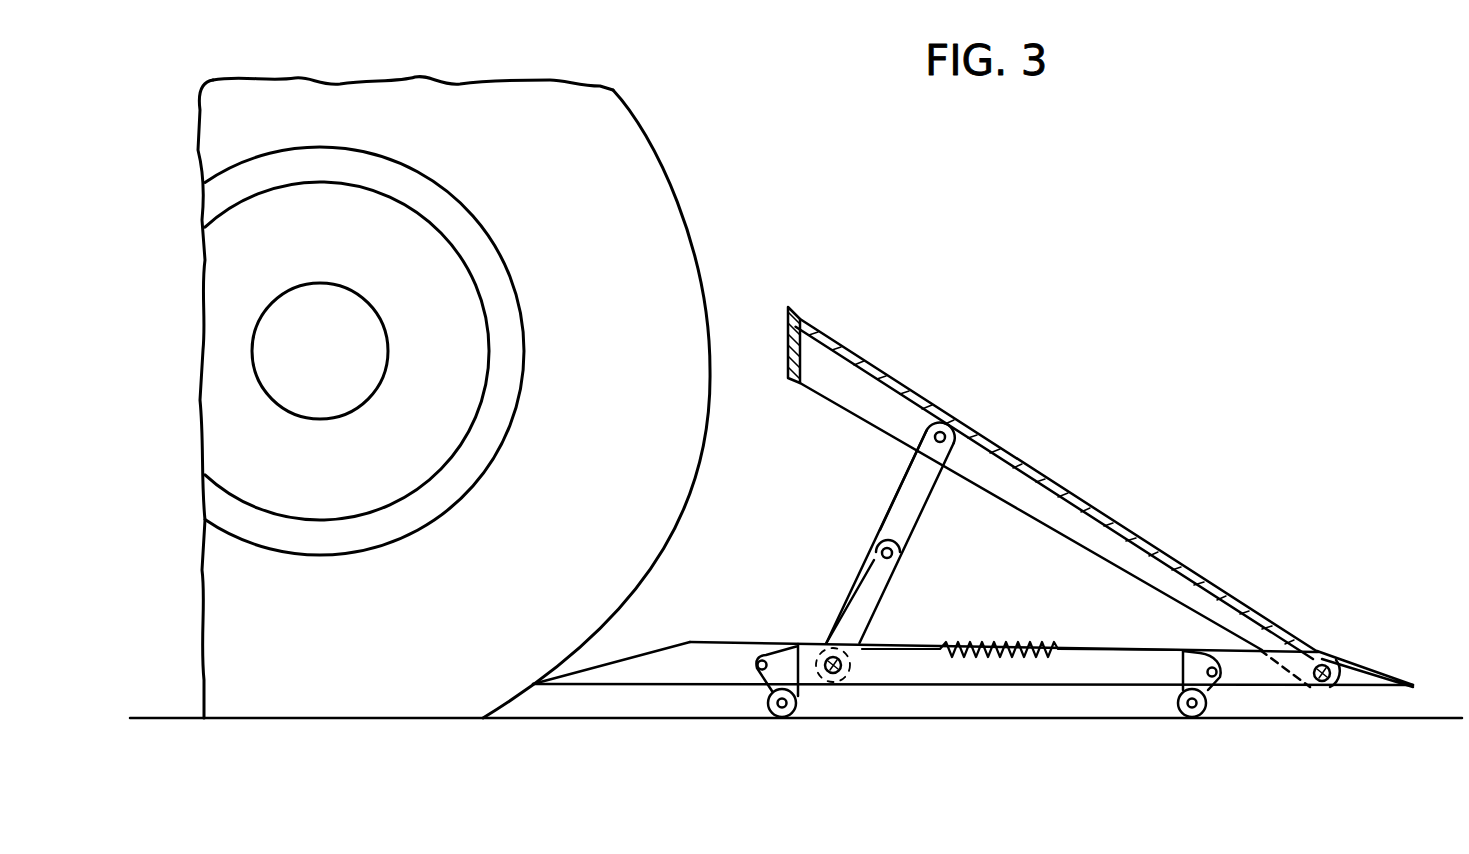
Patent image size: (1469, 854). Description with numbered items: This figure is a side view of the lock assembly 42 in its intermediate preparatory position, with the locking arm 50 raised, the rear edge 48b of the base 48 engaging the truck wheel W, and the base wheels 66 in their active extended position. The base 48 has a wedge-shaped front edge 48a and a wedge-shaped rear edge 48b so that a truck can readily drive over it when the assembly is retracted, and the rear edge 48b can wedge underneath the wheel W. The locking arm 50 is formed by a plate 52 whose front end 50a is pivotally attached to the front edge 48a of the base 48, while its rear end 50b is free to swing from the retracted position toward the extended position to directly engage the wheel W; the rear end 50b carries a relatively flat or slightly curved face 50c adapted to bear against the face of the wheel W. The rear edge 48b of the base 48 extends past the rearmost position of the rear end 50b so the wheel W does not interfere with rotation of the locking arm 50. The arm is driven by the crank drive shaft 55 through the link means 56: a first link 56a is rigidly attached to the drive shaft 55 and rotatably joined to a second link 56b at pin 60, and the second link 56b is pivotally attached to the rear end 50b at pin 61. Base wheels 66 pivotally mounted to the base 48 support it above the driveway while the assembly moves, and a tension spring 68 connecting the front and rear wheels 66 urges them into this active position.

The wheel W is at (622, 339).
The lock assembly 42 is at (1228, 370).
The base 48 is at (975, 696).
The front edge 48a is at (1408, 684).
The rear edge 48b is at (566, 682).
The locking arm 50 is at (1051, 485).
The front end 50a is at (1288, 650).
The rear end 50b is at (828, 330).
The face 50c is at (790, 360).
The plate 52 is at (1050, 477).
The crank drive shaft 55 is at (846, 653).
The link means 56 is at (908, 505).
The first link 56a is at (855, 585).
The second link 56b is at (903, 483).
The pin 60 is at (876, 549).
The pin 61 is at (945, 425).
The base wheels 66 is at (778, 718).
The tension spring 68 is at (1030, 646).